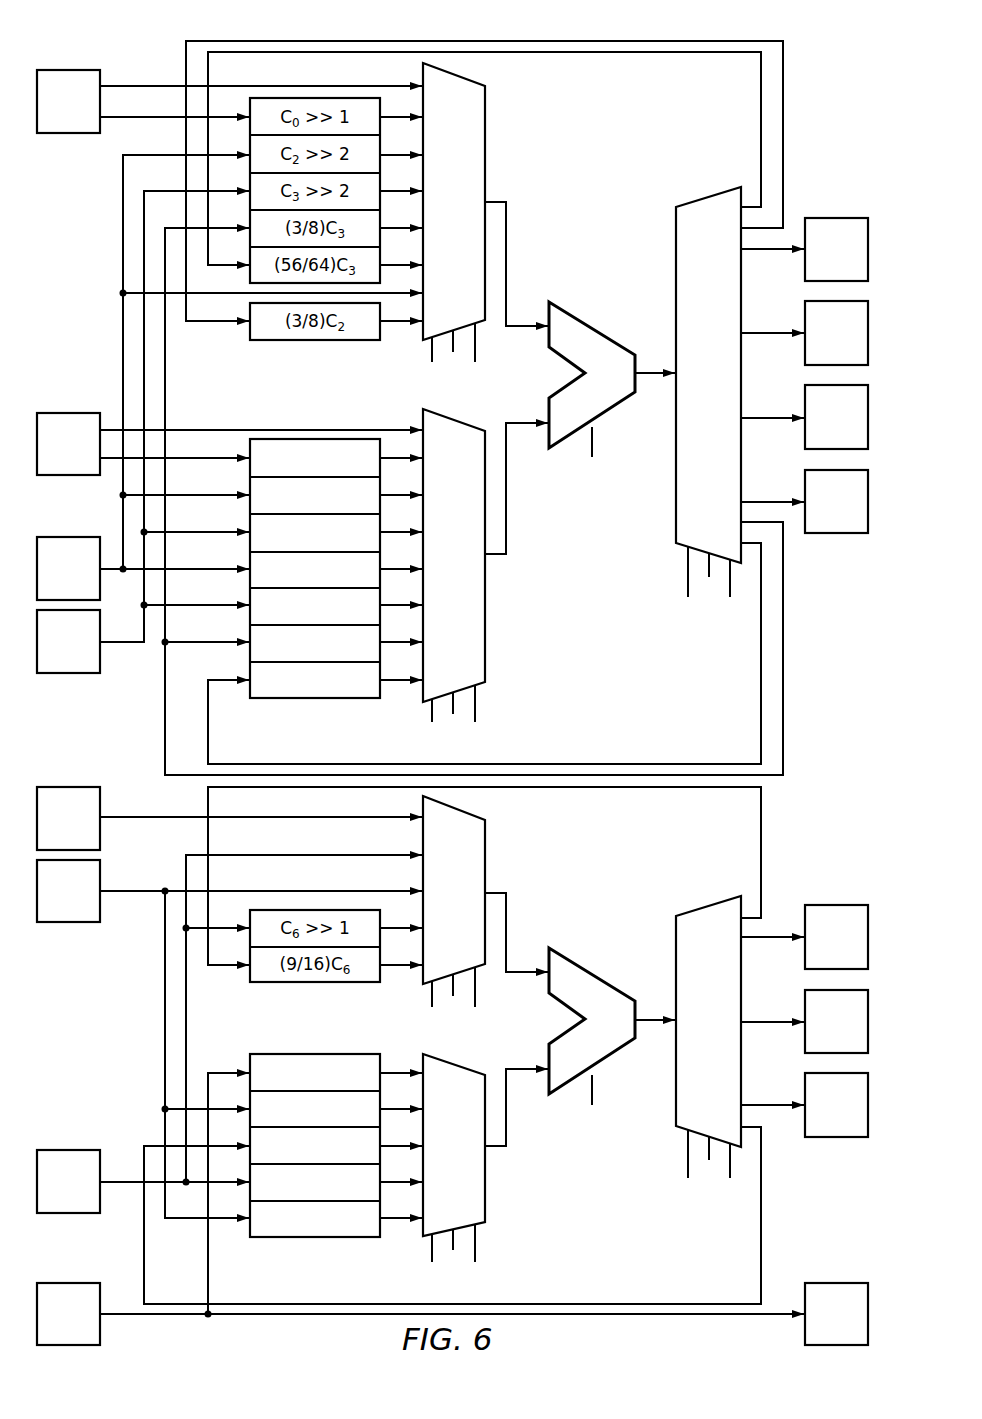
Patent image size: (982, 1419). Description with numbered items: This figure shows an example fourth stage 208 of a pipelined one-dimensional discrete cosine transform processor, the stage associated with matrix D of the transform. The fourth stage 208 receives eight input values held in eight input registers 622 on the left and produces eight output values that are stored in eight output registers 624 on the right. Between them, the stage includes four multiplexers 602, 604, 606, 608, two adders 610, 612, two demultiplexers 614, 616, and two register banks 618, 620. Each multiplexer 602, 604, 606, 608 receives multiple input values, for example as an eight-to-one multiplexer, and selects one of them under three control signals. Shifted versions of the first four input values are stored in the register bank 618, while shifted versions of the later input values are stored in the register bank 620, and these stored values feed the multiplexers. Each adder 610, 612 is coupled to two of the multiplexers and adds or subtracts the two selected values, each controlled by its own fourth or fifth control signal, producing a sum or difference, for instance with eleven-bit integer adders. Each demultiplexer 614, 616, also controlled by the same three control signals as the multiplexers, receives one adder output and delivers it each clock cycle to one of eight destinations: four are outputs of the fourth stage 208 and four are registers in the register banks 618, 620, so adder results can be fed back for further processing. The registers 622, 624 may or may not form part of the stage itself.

The fourth stage 208 is at (810, 88).
The multiplexer 602 is at (436, 215).
The multiplexer 604 is at (436, 567).
The multiplexer 606 is at (436, 905).
The multiplexer 608 is at (436, 1158).
The adder 610 is at (596, 326).
The adder 612 is at (596, 972).
The demultiplexer 614 is at (690, 385).
The demultiplexer 616 is at (690, 1033).
The register bank 618 is at (304, 418).
The register bank 620 is at (305, 1250).
The registers 622 is at (66, 65).
The registers 624 is at (840, 205).